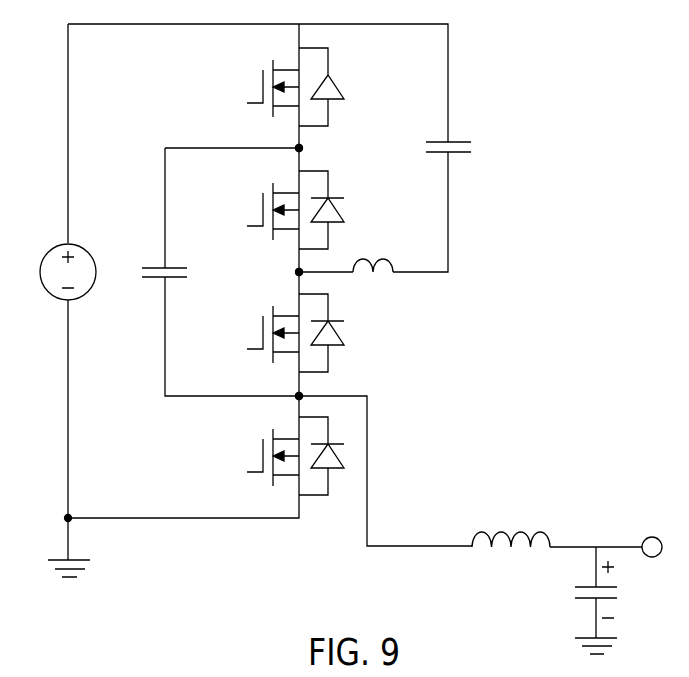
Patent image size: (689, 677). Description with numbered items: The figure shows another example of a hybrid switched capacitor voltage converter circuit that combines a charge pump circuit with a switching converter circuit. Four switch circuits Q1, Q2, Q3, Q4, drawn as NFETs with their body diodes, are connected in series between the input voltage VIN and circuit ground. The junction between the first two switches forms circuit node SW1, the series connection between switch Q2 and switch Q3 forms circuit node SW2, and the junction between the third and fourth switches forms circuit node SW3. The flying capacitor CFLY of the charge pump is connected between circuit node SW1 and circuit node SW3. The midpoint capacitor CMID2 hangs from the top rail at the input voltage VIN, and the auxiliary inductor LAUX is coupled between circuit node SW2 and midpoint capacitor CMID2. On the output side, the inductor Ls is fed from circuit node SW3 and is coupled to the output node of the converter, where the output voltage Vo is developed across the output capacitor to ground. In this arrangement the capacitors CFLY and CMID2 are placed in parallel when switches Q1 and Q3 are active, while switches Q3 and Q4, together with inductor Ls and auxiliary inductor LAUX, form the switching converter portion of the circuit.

The switch circuit Q1 is at (291, 87).
The switch circuit Q2 is at (291, 210).
The switch circuit Q3 is at (291, 333).
The switch circuit Q4 is at (291, 456).
The circuit node SW1 is at (321, 154).
The circuit node SW2 is at (279, 275).
The circuit node SW3 is at (341, 384).
The flying capacitor CFLY is at (152, 248).
The midpoint capacitor CMID2 is at (467, 125).
The auxiliary inductor LAUX is at (373, 244).
The inductor Ls is at (511, 525).
The output voltage Vo is at (613, 600).
The input voltage VIN is at (66, 250).